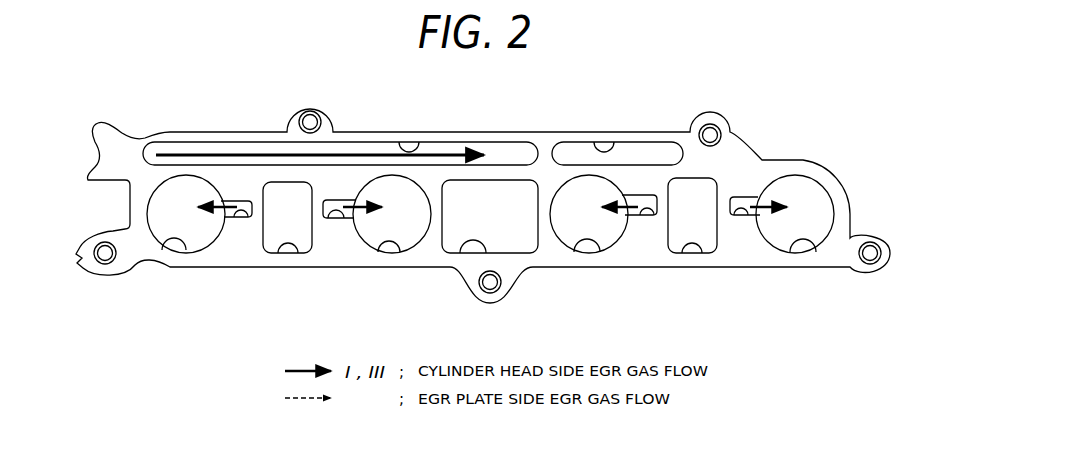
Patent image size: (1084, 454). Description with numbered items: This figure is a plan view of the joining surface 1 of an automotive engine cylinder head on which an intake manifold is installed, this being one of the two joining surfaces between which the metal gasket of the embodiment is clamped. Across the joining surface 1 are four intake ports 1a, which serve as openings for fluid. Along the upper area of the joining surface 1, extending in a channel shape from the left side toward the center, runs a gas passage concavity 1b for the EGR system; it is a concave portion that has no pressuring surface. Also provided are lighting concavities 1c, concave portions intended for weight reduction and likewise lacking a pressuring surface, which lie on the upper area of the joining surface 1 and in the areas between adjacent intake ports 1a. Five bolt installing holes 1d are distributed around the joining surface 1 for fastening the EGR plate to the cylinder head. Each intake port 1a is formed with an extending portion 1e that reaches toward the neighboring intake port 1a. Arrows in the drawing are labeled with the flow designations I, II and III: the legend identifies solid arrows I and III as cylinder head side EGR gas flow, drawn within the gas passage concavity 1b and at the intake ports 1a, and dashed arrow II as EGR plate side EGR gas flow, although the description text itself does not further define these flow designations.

The joining surface 1 is at (733, 162).
The intake port 1a is at (188, 253).
The gas passage concavity 1b is at (419, 150).
The lighting concavity 1c is at (613, 150).
The bolt installing hole 1d is at (313, 120).
The extending portion 1e is at (240, 215).
The cylinder head side EGR gas flow (groove) I is at (246, 154).
The EGR plate side EGR gas flow II is at (327, 399).
The cylinder head side EGR gas flow (ports) III is at (210, 209).